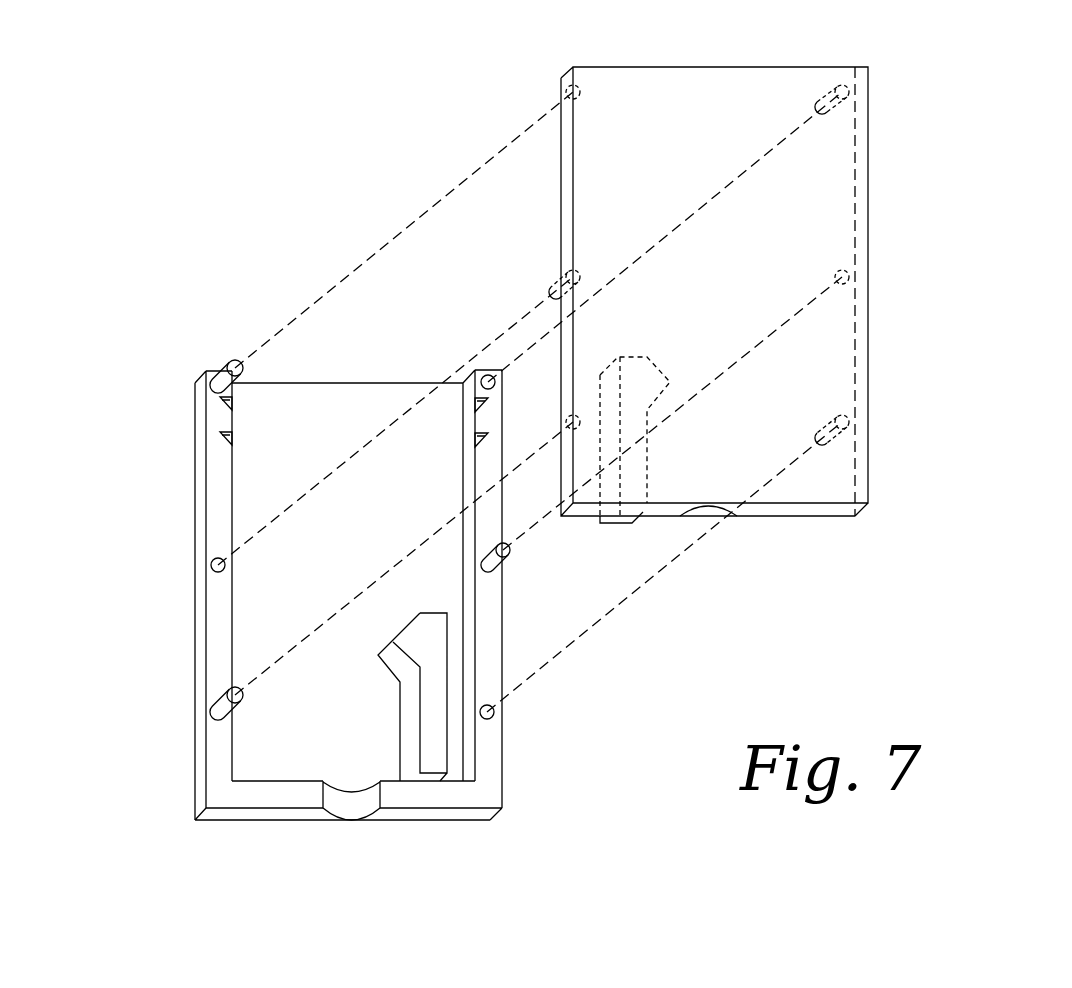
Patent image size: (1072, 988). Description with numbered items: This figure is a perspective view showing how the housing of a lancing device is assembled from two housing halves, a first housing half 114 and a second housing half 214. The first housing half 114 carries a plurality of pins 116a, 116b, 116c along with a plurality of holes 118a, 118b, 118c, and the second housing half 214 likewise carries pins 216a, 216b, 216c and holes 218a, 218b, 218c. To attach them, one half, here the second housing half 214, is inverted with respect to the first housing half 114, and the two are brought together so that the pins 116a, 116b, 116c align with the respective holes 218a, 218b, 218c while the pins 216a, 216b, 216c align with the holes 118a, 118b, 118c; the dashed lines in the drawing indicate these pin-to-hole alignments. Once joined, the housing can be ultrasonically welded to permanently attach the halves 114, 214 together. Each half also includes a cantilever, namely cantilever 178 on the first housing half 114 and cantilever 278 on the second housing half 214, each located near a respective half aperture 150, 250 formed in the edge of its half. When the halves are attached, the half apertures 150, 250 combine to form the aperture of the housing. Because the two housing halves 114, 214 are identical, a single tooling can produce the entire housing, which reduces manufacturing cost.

The first housing half 114 is at (218, 336).
The pin 116a is at (210, 378).
The pin 116b is at (510, 553).
The pin 116c is at (212, 705).
The hole 118a is at (487, 376).
The hole 118b is at (211, 565).
The hole 118c is at (495, 712).
The half aperture 150 is at (350, 812).
The cantilever 178 is at (437, 641).
The second housing half 214 is at (963, 65).
The pin 216a is at (851, 92).
The pin 216b is at (560, 289).
The pin 216c is at (851, 422).
The hole 218a is at (566, 92).
The hole 218b is at (855, 277).
The hole 218c is at (561, 422).
The half aperture 250 is at (707, 521).
The cantilever 278 is at (622, 526).